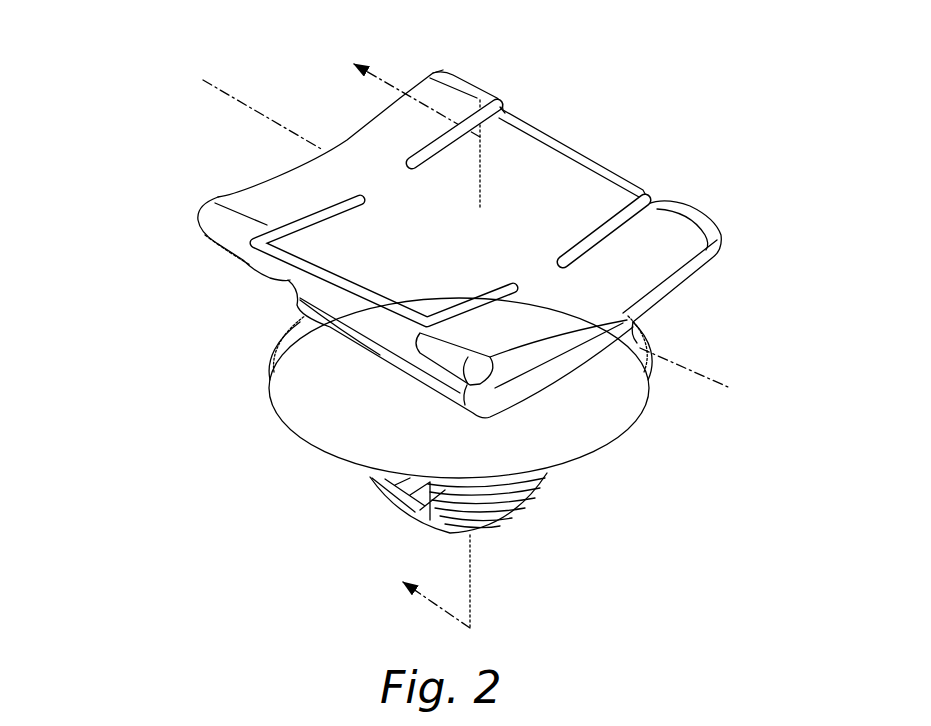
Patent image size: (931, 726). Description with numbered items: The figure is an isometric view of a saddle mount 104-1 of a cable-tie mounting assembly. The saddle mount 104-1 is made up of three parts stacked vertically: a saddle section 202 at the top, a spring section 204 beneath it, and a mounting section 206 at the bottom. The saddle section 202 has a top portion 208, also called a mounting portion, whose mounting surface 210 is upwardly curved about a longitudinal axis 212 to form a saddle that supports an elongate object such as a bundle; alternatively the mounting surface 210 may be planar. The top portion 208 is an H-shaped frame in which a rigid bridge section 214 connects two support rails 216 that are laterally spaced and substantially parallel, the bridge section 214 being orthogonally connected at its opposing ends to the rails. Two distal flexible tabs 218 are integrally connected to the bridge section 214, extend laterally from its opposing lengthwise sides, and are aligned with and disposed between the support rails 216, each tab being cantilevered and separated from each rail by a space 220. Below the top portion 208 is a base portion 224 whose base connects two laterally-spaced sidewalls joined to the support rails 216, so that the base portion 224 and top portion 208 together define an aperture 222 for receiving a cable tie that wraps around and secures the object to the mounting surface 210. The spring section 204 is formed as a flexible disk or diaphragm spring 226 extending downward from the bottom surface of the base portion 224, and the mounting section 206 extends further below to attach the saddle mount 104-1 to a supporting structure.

The saddle mount 104-1 is at (186, 38).
The saddle section 202 is at (93, 117).
The spring section 204 is at (296, 445).
The mounting section 206 is at (371, 519).
The top portion 208 is at (203, 257).
The mounting surface 210 is at (385, 236).
The longitudinal axis 212 is at (722, 388).
The bridge section 214 is at (433, 220).
The support rails 216 is at (307, 177).
The distal flexible tabs 218 is at (543, 170).
The space 220 is at (514, 99).
The aperture 222 is at (361, 309).
The base portion 224 is at (391, 369).
The diaphragm spring 226 is at (357, 460).